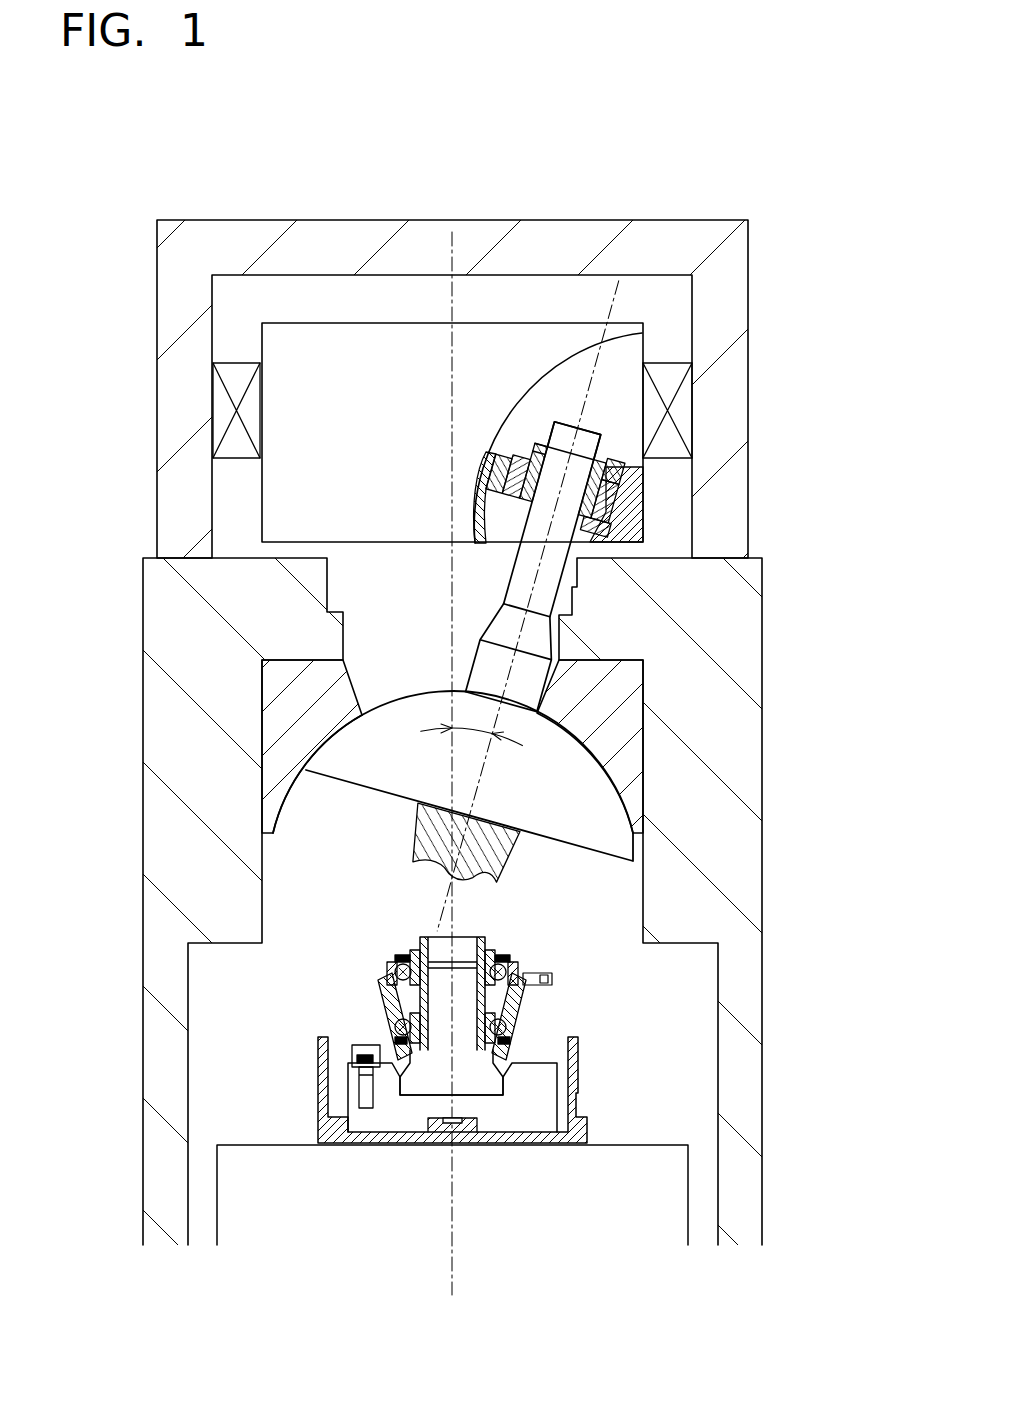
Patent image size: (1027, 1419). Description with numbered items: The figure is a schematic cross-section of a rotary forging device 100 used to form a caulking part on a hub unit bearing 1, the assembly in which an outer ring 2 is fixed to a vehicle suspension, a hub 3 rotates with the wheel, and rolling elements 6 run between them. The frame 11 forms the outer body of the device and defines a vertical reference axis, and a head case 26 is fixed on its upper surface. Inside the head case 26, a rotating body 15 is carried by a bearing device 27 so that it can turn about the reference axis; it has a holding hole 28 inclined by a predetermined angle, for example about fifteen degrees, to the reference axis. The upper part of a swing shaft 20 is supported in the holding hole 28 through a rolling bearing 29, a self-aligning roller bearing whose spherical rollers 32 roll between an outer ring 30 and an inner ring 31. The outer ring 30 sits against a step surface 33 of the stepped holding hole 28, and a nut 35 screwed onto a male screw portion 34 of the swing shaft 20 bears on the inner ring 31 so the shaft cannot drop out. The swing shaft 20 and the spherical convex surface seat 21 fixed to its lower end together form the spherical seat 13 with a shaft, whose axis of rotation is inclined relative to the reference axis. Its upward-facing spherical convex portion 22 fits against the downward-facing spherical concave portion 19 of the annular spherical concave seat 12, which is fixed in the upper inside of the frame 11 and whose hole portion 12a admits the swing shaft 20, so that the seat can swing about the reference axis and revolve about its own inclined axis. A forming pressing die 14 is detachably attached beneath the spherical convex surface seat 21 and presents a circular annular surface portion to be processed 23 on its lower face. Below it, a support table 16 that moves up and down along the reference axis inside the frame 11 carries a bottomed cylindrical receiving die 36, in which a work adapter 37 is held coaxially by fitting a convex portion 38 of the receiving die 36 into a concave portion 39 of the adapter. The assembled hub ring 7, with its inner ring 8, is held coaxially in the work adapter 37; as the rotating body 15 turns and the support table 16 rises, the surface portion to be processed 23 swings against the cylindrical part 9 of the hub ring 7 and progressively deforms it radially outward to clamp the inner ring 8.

The rotary forging device 100 is at (755, 126).
The hub unit bearing 1 is at (345, 985).
The outer ring 2 is at (447, 1051).
The hub 3 is at (390, 1090).
The rolling elements 6 is at (395, 1027).
The hub ring 7 is at (503, 1056).
The inner ring 8 is at (490, 947).
The cylindrical part 9 is at (420, 943).
The frame 11 is at (188, 627).
The spherical concave seat 12 is at (513, 709).
The hole portion 12a is at (362, 705).
The spherical seat with a shaft 13 is at (525, 683).
The forming pressing die 14 is at (485, 856).
The rotating body 15 is at (325, 357).
The support table 16 is at (293, 1182).
The spherical concave portion 19 is at (573, 760).
The swing shaft 20 is at (560, 625).
The spherical convex surface seat 21 is at (300, 775).
The spherical convex portion 22 is at (640, 782).
The surface portion to be processed 23 is at (430, 860).
The head case 26 is at (180, 467).
The bearing device 27 is at (227, 412).
The holding hole 28 is at (613, 464).
The rolling bearing 29 is at (625, 466).
The outer ring 30 is at (628, 488).
The inner ring 31 is at (498, 505).
The spherical rollers 32 is at (500, 458).
The step surface 33 is at (626, 512).
The male screw portion 34 is at (556, 453).
The nut 35 is at (533, 452).
The receiving die 36 is at (320, 1085).
The work adapter 37 is at (530, 1110).
The convex portion 38 is at (497, 1130).
The concave portion 39 is at (437, 1133).